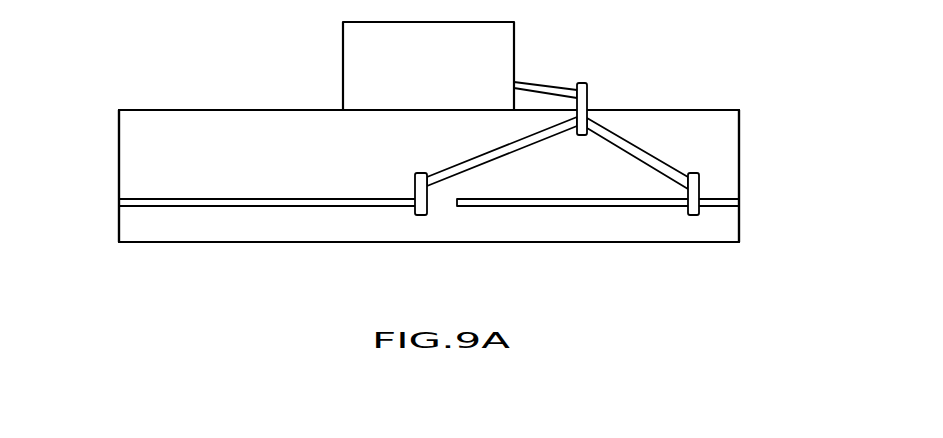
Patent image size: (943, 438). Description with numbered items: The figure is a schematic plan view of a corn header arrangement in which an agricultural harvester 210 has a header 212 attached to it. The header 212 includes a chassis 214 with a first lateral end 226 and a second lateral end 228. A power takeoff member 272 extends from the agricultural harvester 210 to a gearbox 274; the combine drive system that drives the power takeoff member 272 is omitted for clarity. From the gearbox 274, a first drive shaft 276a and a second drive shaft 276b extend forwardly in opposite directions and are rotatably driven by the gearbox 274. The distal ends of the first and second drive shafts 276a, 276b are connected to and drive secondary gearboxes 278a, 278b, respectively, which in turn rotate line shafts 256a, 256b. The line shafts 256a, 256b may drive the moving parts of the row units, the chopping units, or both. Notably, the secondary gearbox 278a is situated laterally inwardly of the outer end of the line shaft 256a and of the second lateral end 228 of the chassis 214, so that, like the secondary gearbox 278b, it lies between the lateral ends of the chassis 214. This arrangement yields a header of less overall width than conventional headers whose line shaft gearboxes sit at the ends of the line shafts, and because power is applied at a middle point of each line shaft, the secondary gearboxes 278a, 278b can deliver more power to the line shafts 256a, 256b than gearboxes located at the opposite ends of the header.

The agricultural harvester 210 is at (532, 33).
The header 212 is at (242, 100).
The chassis 214 is at (302, 108).
The first lateral end 226 is at (119, 186).
The second lateral end 228 is at (742, 157).
The line shaft 256a is at (535, 198).
The line shaft 256b is at (225, 199).
The power takeoff member 272 is at (528, 82).
The gearbox 274 is at (588, 93).
The first drive shaft 276a is at (645, 148).
The second drive shaft 276b is at (488, 152).
The secondary gearbox 278a is at (700, 193).
The secondary gearbox 278b is at (415, 182).